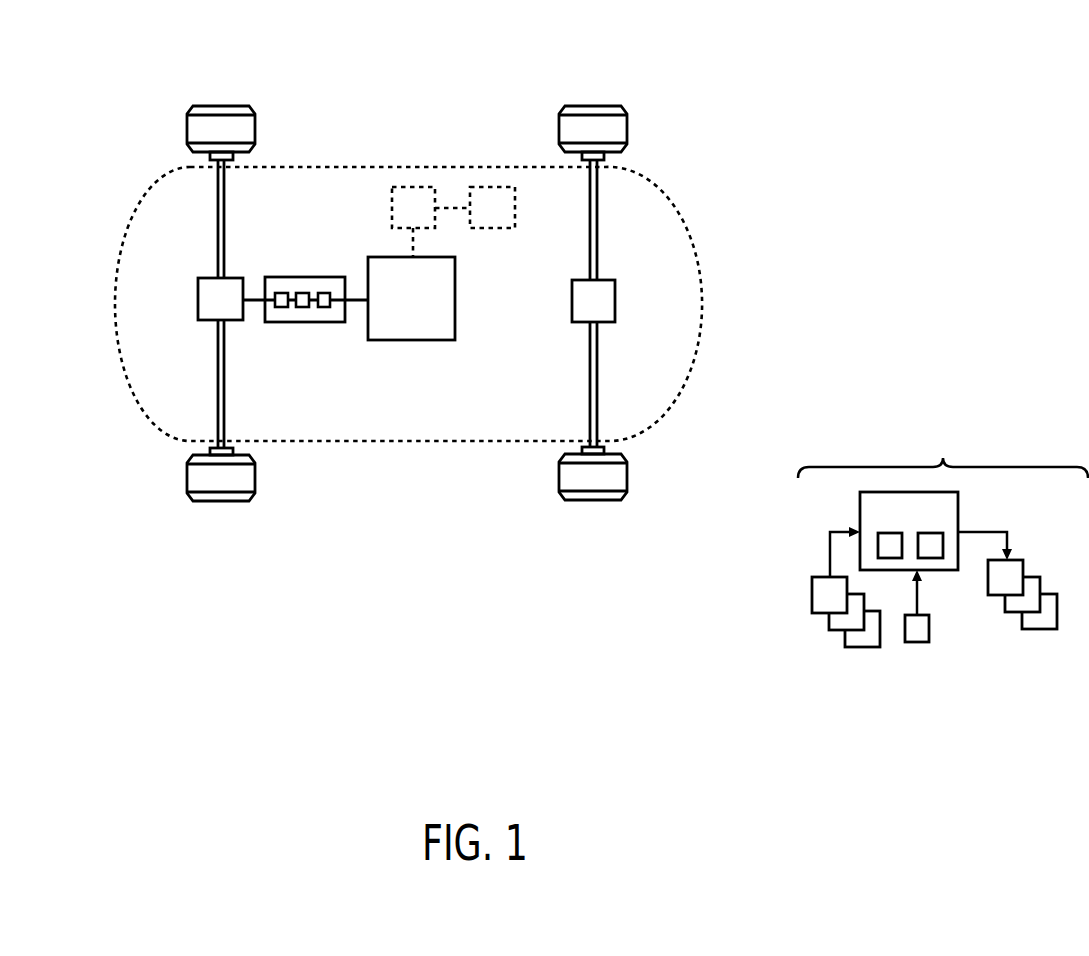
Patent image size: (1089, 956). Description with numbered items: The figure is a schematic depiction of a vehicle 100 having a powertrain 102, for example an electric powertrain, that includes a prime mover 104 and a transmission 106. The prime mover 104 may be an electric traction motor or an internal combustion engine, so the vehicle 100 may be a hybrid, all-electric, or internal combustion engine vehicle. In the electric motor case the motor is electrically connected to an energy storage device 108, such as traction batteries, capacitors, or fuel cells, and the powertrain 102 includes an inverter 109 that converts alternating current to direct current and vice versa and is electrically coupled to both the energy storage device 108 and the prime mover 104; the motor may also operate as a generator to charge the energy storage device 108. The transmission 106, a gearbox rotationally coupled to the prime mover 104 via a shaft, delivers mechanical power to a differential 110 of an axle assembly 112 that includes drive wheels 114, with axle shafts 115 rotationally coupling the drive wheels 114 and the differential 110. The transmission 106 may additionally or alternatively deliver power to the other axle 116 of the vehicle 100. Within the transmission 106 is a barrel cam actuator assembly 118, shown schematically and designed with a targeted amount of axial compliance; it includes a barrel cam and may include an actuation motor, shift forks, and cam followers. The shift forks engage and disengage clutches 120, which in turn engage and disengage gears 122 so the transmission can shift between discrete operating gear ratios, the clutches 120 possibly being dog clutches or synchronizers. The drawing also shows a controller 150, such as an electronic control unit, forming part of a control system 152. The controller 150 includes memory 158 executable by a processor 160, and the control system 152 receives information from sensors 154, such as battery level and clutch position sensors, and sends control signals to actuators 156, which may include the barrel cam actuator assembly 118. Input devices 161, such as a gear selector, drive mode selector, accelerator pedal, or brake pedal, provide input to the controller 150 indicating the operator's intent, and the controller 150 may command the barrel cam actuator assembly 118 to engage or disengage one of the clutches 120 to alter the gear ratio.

The vehicle 100 is at (718, 72).
The powertrain 102 is at (488, 99).
The prime mover 104 is at (437, 340).
The transmission 106 is at (285, 322).
The energy storage device 108 is at (515, 221).
The inverter 109 is at (392, 192).
The differential 110 is at (198, 310).
The axle assembly 112 is at (254, 260).
The drive wheels 114 is at (217, 503).
The axle shafts 115 is at (225, 380).
The other axle 116 is at (542, 301).
The barrel cam actuator assembly 118 is at (326, 293).
The clutches 120 is at (302, 293).
The gears 122 is at (281, 293).
The controller 150 is at (926, 519).
The control system 152 is at (943, 564).
The sensors 154 is at (798, 653).
The actuators 156 is at (978, 633).
The memory 158 is at (886, 533).
The processor 160 is at (935, 533).
The input device 161 is at (922, 645).